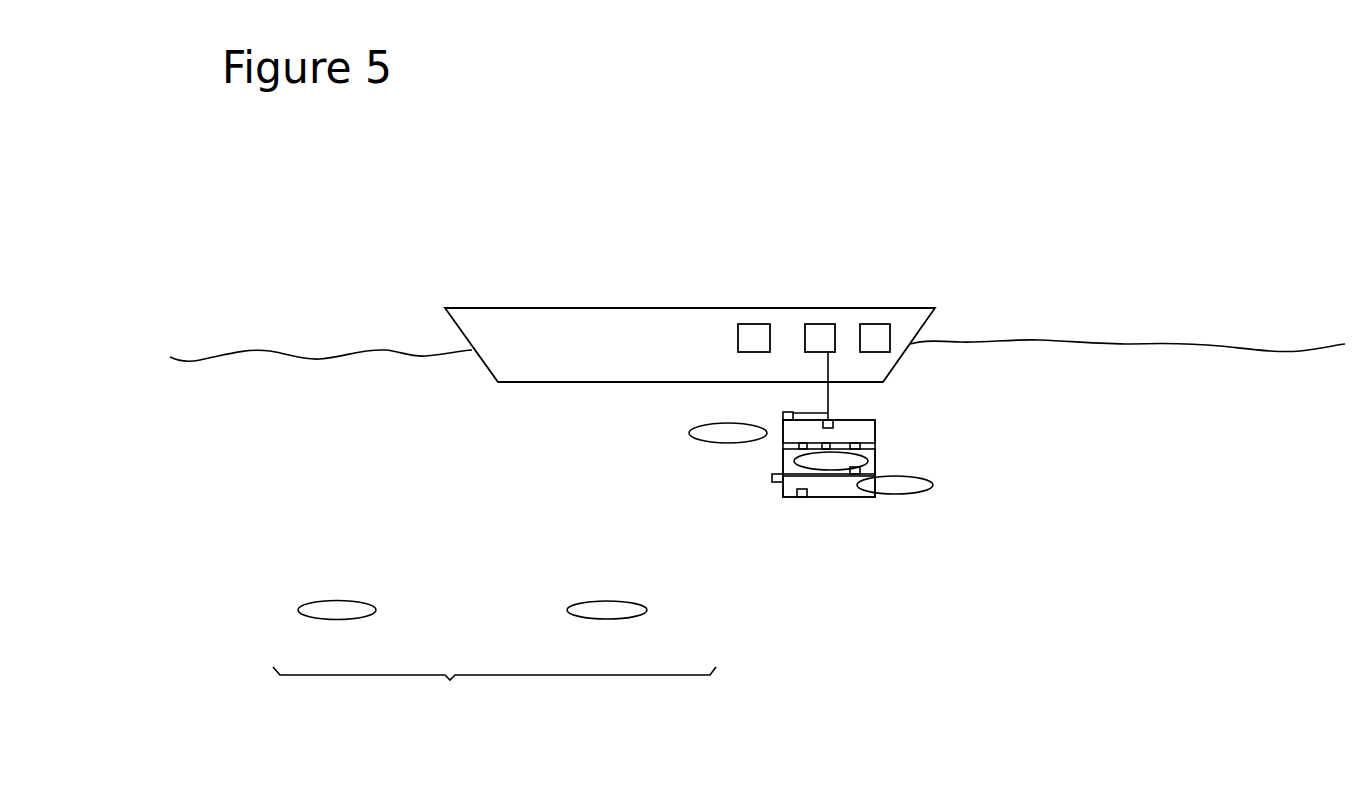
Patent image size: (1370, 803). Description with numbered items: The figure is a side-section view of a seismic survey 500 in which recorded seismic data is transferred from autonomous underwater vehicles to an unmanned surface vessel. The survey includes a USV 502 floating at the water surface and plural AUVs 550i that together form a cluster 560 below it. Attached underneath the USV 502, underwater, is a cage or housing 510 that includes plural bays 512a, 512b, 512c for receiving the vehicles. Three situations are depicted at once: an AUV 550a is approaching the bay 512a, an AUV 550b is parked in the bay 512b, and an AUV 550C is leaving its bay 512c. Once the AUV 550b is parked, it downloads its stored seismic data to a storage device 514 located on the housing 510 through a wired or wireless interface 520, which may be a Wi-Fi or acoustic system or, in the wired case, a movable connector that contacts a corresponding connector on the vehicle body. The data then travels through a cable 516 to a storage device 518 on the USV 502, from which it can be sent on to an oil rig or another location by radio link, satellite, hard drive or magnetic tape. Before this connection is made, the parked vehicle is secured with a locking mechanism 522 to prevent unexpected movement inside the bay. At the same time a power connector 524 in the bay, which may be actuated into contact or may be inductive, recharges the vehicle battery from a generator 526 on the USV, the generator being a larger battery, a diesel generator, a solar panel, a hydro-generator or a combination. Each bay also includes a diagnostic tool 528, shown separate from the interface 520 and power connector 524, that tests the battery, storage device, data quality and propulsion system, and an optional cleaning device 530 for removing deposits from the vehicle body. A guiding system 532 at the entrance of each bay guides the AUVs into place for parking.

The seismic survey 500 is at (770, 224).
The USV 502 is at (474, 294).
The housing 510 is at (875, 420).
The bay 512a is at (867, 432).
The bay 512b is at (875, 460).
The bay 512c is at (823, 486).
The storage device 514 is at (788, 412).
The cable 516 is at (830, 413).
The storage device 518 is at (820, 324).
The interface 520 is at (830, 445).
The locking mechanism 522 is at (853, 474).
The power connector 524 is at (800, 448).
The generator 526 is at (753, 324).
The diagnostic tool 528 is at (860, 449).
The cleaning device 530 is at (874, 324).
The guiding system 532 is at (773, 478).
The AUV 550a is at (711, 424).
The AUV 550b is at (808, 461).
The AUV 550C is at (898, 484).
The AUVs 550i is at (366, 617).
The cluster 560 is at (494, 690).